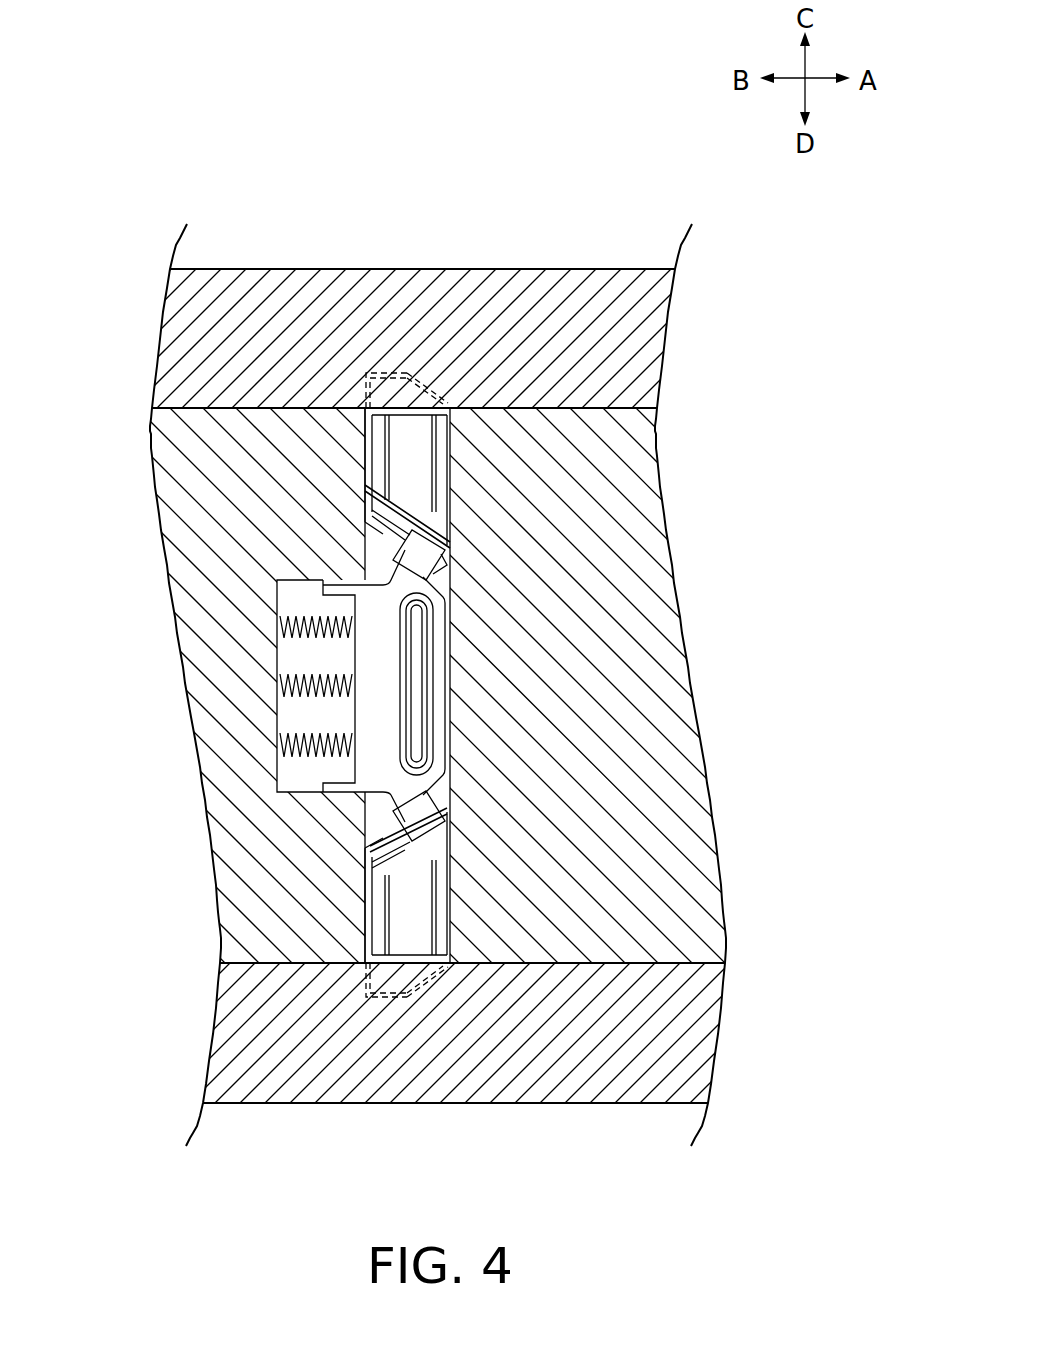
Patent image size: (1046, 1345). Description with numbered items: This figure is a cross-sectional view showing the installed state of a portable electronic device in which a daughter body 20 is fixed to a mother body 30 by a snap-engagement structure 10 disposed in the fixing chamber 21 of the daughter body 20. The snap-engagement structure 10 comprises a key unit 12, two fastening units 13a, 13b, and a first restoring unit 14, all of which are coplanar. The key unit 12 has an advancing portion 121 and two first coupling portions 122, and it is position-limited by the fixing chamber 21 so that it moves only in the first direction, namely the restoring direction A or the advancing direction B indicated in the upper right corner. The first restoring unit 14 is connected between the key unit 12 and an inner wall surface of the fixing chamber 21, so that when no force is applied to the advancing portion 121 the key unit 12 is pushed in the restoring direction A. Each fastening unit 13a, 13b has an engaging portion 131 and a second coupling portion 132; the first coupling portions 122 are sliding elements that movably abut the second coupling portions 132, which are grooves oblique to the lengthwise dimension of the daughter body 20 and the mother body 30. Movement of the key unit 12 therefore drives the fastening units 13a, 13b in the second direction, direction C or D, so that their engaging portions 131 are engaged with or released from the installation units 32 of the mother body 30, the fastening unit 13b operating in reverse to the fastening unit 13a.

The snap-engagement structure 10 is at (437, 685).
The key unit 12 is at (596, 684).
The advancing portion 121 is at (412, 742).
The first coupling portion 122 is at (428, 551).
The fastening unit 13a is at (451, 469).
The fastening unit 13b is at (470, 878).
The engaging portion 131 is at (400, 372).
The second coupling portion 132 is at (385, 505).
The first restoring unit 14 is at (280, 680).
The daughter body 20 is at (672, 893).
The fixing chamber 21 is at (302, 779).
The mother body 30 is at (550, 268).
The installation unit 32 is at (435, 372).